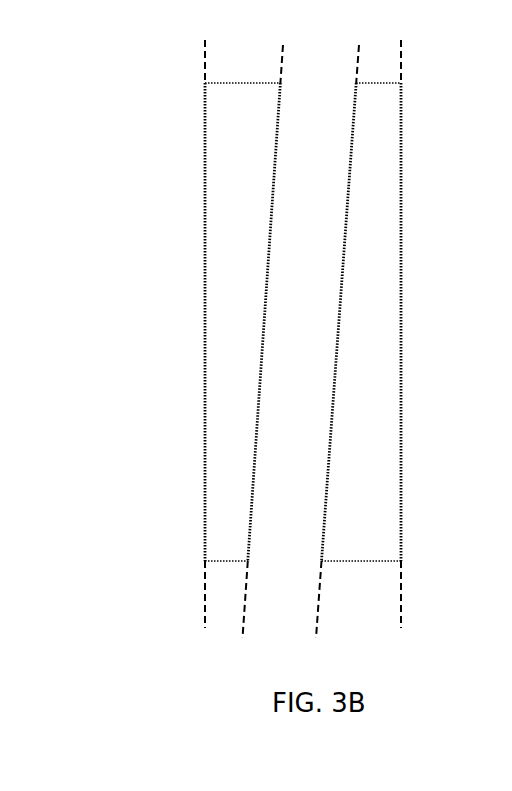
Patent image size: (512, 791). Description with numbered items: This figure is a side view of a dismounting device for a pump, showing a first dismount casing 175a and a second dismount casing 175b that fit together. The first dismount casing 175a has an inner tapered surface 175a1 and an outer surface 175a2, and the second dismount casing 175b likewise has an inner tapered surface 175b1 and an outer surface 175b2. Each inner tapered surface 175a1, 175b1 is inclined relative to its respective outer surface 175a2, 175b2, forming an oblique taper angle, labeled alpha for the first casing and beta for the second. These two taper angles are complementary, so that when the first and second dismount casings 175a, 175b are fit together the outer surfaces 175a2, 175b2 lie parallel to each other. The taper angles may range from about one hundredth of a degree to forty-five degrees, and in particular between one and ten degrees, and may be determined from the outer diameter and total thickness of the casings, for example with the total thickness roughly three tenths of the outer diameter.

The second dismount casing 175b is at (220, 339).
The inner tapered surface 175b1 is at (272, 230).
The outer surface 175b2 is at (204, 155).
The first dismount casing 175a is at (388, 339).
The inner tapered surface 175a1 is at (327, 493).
The outer surface 175a2 is at (402, 492).